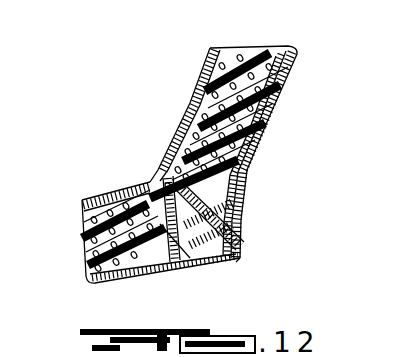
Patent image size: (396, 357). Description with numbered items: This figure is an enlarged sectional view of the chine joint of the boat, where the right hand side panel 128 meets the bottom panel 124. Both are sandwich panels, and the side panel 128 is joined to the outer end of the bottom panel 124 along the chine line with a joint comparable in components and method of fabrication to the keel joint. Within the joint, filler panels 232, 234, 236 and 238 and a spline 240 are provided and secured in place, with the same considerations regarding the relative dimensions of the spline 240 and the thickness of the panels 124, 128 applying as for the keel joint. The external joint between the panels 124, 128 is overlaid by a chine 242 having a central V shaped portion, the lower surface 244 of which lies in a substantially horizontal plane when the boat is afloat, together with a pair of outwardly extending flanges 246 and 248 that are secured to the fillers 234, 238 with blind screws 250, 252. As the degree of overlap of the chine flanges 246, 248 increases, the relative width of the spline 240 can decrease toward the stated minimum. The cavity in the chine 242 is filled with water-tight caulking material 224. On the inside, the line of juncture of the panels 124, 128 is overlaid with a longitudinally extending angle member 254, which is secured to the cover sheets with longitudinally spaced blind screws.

The side panel 128 is at (210, 48).
The filler panel 236 is at (193, 113).
The spline 240 is at (158, 176).
The bottom panel 124 is at (82, 200).
The angle member 254 is at (142, 178).
The filler panel 232 is at (82, 208).
The filler panel 238 is at (258, 146).
The flange 246 is at (253, 181).
The blind screw 252 is at (245, 199).
The chine 242 is at (250, 230).
The caulking material 224 is at (240, 247).
The lower surface 244 is at (232, 262).
The blind screw 250 is at (165, 265).
The filler panel 234 is at (125, 272).
The flange 248 is at (160, 270).